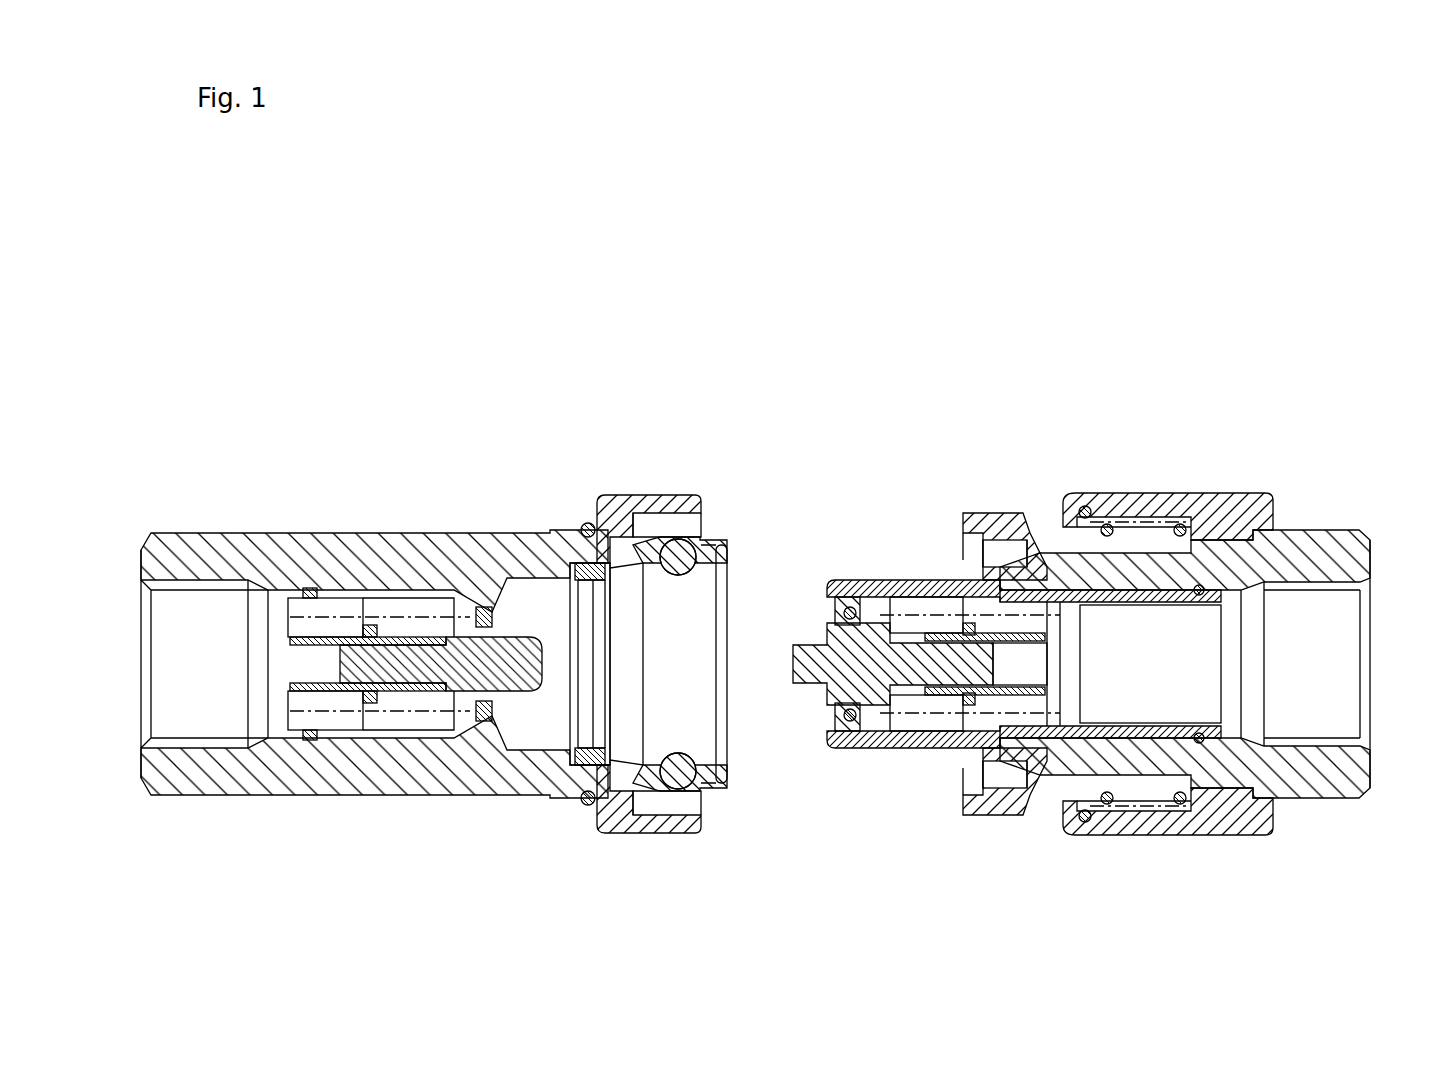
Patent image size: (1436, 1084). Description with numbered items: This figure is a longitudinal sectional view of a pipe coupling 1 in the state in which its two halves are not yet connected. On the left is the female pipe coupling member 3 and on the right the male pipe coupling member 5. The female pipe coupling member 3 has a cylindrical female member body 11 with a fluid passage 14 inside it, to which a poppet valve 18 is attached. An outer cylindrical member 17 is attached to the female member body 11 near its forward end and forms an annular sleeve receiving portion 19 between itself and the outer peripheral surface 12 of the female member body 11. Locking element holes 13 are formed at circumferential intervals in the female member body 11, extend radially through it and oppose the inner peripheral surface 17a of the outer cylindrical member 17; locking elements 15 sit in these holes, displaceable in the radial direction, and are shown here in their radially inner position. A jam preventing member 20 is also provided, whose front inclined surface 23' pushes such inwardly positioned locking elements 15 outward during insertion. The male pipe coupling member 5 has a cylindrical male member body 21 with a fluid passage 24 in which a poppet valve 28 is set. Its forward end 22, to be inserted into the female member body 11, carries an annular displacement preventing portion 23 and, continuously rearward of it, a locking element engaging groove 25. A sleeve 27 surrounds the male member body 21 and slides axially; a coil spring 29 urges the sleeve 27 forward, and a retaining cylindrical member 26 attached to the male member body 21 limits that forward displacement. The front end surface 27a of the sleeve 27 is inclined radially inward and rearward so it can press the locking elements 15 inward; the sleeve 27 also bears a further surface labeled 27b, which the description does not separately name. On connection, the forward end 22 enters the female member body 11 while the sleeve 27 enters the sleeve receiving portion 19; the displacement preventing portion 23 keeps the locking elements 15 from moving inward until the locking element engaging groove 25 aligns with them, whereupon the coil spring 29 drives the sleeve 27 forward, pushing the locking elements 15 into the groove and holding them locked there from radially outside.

The pipe coupling 1 is at (822, 285).
The female pipe coupling member 3 is at (193, 480).
The male pipe coupling member 5 is at (1367, 467).
The female member body 11 is at (473, 552).
The outer peripheral surface 12 is at (712, 540).
The locking element holes 13 is at (707, 538).
The fluid passage 14 is at (533, 723).
The locking elements 15 is at (682, 568).
The outer cylindrical member 17 is at (633, 500).
The inner peripheral surface 17a is at (707, 533).
The poppet valve 18 is at (395, 673).
The sleeve receiving portion 19 is at (660, 523).
The jam preventing member 20 is at (628, 527).
The male member body 21 is at (1317, 545).
The forward end 22 is at (847, 580).
The displacement preventing portion 23 is at (976, 692).
The front inclined surface 23' is at (890, 600).
The fluid passage 24 is at (1160, 707).
The locking element engaging groove 25 is at (997, 753).
The retaining cylindrical member 26 is at (1210, 505).
The sleeve 27 is at (997, 520).
The front end surface 27a is at (960, 530).
The collet outer face 27b is at (1042, 533).
The poppet valve 28 is at (917, 670).
The coil spring 29 is at (1137, 490).